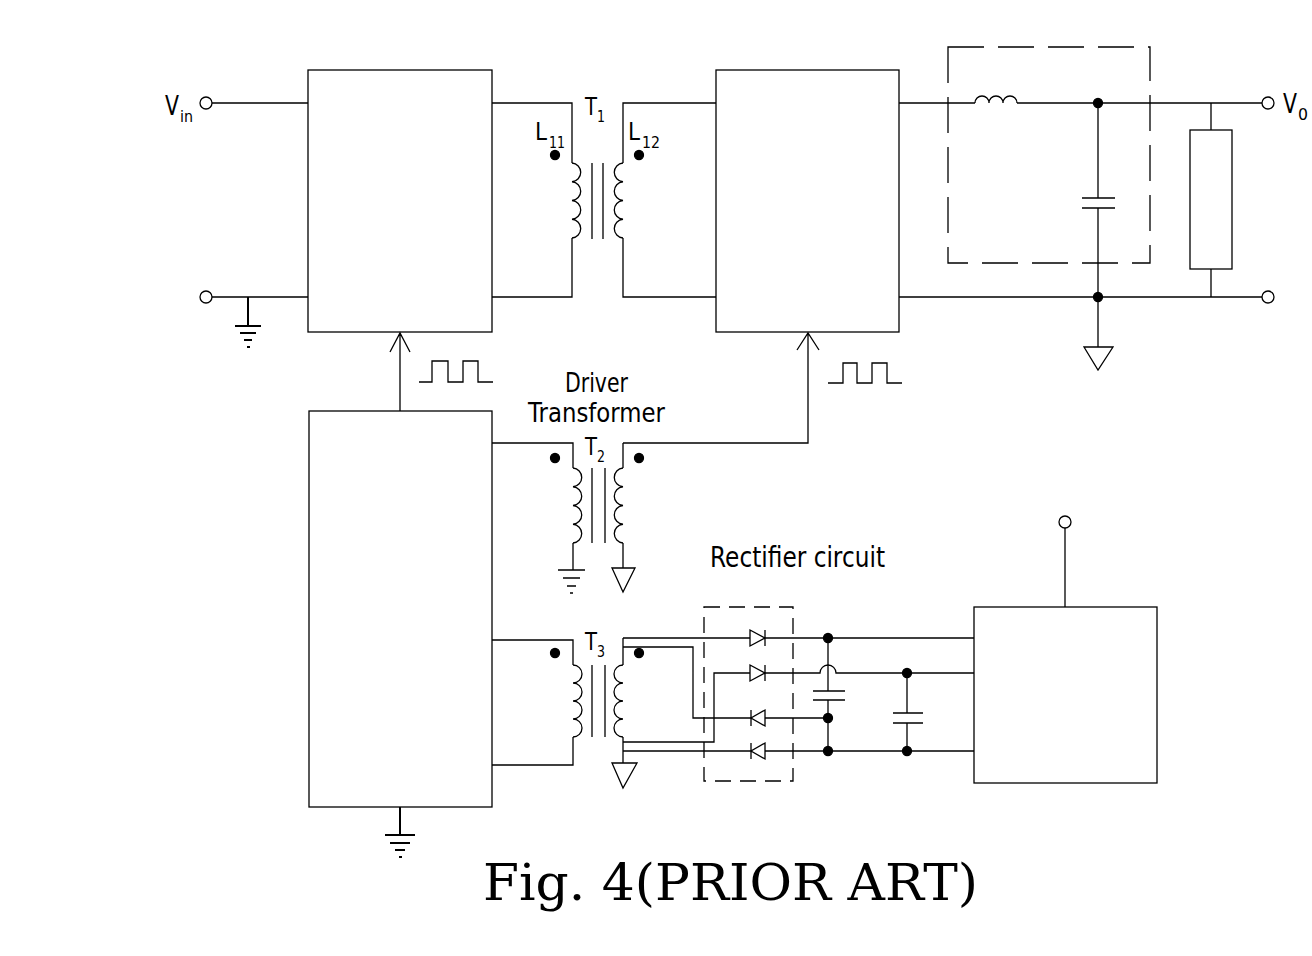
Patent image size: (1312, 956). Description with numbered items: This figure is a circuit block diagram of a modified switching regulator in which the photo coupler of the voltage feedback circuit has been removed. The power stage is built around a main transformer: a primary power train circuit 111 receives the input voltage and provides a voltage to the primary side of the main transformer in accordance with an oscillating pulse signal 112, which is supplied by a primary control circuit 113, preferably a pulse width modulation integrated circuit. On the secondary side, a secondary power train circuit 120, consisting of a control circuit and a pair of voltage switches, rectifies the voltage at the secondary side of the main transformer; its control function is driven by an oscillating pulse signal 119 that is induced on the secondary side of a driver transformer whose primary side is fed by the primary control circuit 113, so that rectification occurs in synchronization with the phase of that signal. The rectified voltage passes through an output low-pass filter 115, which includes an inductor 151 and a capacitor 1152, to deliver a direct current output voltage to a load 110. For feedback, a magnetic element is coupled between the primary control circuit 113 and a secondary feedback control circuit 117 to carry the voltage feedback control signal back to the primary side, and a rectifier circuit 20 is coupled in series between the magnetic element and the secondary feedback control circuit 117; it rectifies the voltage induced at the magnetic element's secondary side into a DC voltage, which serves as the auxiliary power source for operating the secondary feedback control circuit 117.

The primary power train circuit 111 is at (433, 83).
The secondary power train circuit 120 is at (800, 85).
The output low-pass filter 115 is at (1089, 168).
The output inductor 151 is at (1003, 95).
The capacitor 1152 is at (1095, 197).
The load 110 is at (1220, 248).
The oscillating pulse signal 112 is at (490, 381).
The oscillating pulse signal 119 is at (898, 380).
The primary control circuit 113 is at (328, 477).
The secondary feedback control circuit 117 is at (1125, 622).
The rectifier circuit 20 is at (740, 612).